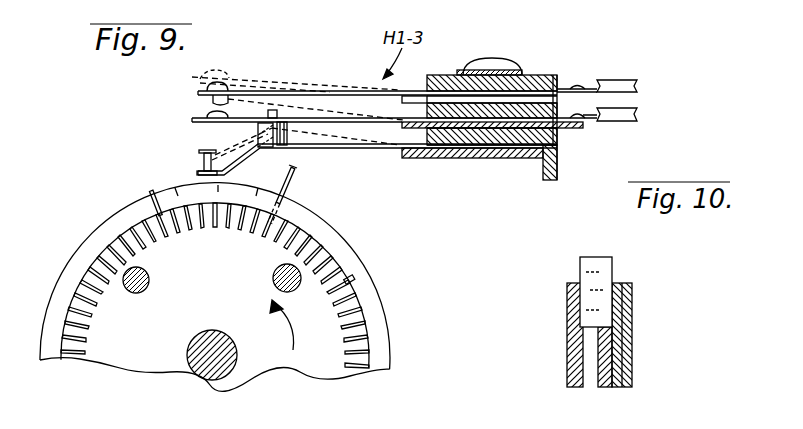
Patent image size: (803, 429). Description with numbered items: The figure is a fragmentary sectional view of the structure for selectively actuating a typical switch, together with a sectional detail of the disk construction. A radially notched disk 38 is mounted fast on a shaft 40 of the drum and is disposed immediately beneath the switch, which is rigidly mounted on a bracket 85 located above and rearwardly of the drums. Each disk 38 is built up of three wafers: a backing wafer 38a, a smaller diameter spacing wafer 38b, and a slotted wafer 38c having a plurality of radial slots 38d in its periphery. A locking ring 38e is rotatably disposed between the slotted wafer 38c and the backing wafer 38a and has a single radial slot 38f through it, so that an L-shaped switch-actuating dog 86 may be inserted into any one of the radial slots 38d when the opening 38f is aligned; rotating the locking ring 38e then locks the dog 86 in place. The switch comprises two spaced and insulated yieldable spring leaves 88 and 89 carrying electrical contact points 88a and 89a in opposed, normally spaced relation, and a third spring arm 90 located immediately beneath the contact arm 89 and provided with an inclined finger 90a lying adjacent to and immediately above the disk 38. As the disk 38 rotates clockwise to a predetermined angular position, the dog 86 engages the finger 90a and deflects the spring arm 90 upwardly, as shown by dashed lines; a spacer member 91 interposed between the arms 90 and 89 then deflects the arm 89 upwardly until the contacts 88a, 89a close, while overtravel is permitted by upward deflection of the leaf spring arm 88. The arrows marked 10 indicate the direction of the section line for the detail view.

In FIG. 9, the disk 38 is at (359, 252).
In FIG. 10, the backing wafer 38a is at (617, 313).
In FIG. 10, the spacing wafer 38b is at (623, 344).
In FIG. 10, the slotted wafer 38c is at (596, 387).
In FIG. 9, the radial slots 38d is at (378, 307).
In FIG. 9, the locking ring 38e is at (102, 238).
In FIG. 10, the locking ring 38e is at (613, 283).
In FIG. 9, the radial slot 38f is at (153, 196).
In FIG. 9, the shaft 40 is at (225, 351).
In FIG. 9, the direction of movement 10 is at (308, 167).
In FIG. 9, the bracket 85 is at (477, 161).
In FIG. 9, the switch-actuating dog 86 is at (289, 187).
In FIG. 10, the switch-actuating dog 86 is at (593, 268).
In FIG. 9, the spring leaf 88 is at (264, 91).
In FIG. 9, the electrical contact point 88a is at (207, 80).
In FIG. 9, the spring leaf 89 is at (318, 118).
In FIG. 9, the electrical contact point 89a is at (207, 114).
In FIG. 9, the spring arm 90 is at (323, 148).
In FIG. 9, the inclined finger 90a is at (200, 161).
In FIG. 9, the spacer member 91 is at (246, 135).